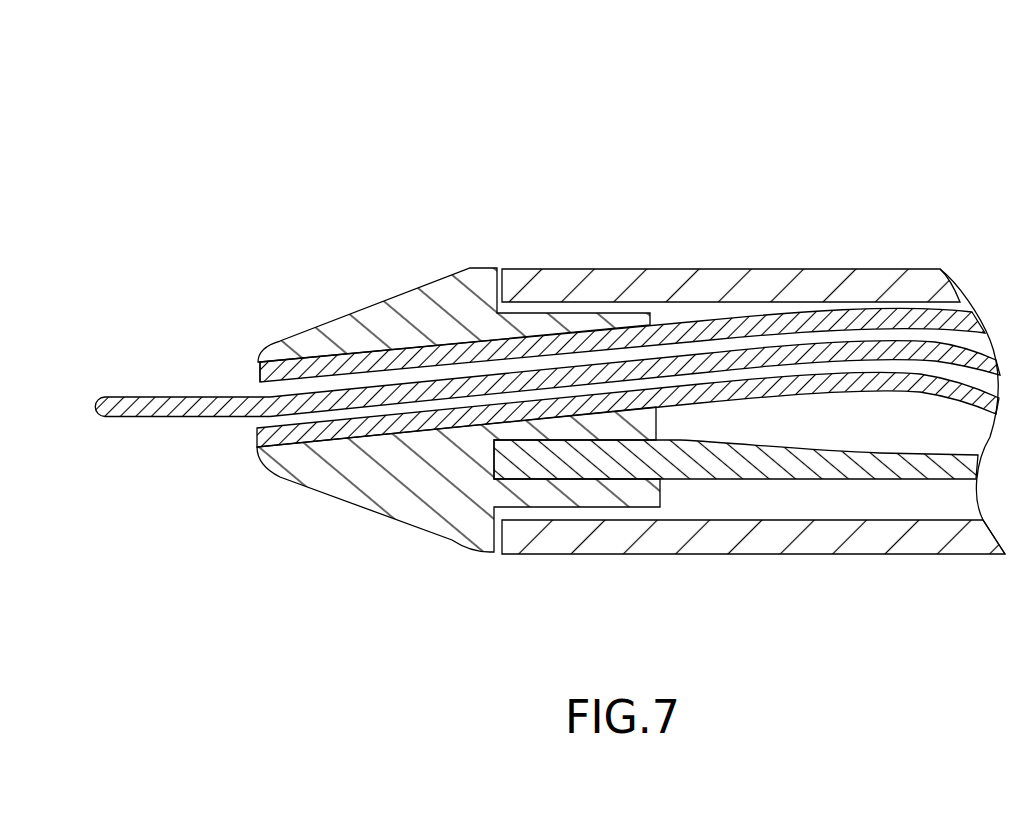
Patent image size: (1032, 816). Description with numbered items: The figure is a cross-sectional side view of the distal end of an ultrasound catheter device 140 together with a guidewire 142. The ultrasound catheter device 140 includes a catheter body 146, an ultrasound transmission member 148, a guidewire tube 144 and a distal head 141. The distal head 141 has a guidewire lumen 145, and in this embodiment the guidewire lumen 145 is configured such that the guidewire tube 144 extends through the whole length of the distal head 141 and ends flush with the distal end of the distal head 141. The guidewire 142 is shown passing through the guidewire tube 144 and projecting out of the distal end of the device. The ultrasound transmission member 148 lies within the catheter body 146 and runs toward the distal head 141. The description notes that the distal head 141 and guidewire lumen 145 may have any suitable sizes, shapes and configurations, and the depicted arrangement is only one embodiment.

The ultrasound catheter device 140 is at (753, 137).
The distal head 141 is at (448, 277).
The inner core tube 142 is at (183, 418).
The guidewire tube 144 is at (391, 356).
The guidewire lumen 145 is at (262, 387).
The catheter body 146 is at (833, 268).
The ultrasound transmission member 148 is at (757, 472).